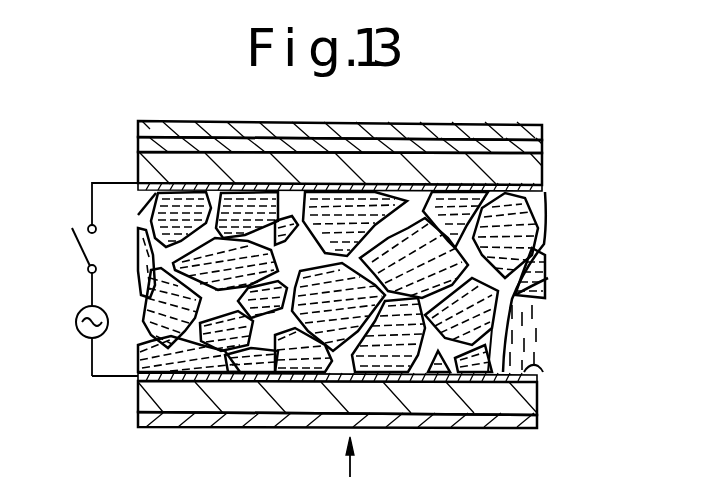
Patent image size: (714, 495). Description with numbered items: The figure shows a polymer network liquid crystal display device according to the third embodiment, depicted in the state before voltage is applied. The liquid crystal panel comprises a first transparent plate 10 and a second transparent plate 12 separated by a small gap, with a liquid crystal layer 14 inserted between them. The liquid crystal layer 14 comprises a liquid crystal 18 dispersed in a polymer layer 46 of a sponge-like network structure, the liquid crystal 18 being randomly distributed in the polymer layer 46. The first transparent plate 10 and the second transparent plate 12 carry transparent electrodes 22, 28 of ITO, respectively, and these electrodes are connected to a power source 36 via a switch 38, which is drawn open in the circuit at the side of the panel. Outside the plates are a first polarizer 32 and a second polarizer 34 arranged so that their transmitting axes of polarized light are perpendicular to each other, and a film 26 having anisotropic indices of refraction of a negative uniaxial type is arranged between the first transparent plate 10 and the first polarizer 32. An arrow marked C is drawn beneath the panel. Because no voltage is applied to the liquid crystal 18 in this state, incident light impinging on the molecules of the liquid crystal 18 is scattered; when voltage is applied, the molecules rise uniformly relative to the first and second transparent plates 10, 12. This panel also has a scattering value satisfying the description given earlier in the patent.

The first transparent plate 10 is at (535, 168).
The second transparent plate 12 is at (537, 393).
The liquid crystal layer 14 is at (553, 270).
The liquid crystal 18 is at (290, 413).
The transparent electrode 22 is at (138, 168).
The film 26 is at (535, 149).
The transparent electrode 28 is at (138, 398).
The first polarizer 32 is at (506, 134).
The second polarizer 34 is at (535, 421).
The power source 36 is at (80, 334).
The switch 38 is at (83, 252).
The polymer layer 46 is at (545, 308).
The viewing direction C is at (352, 461).